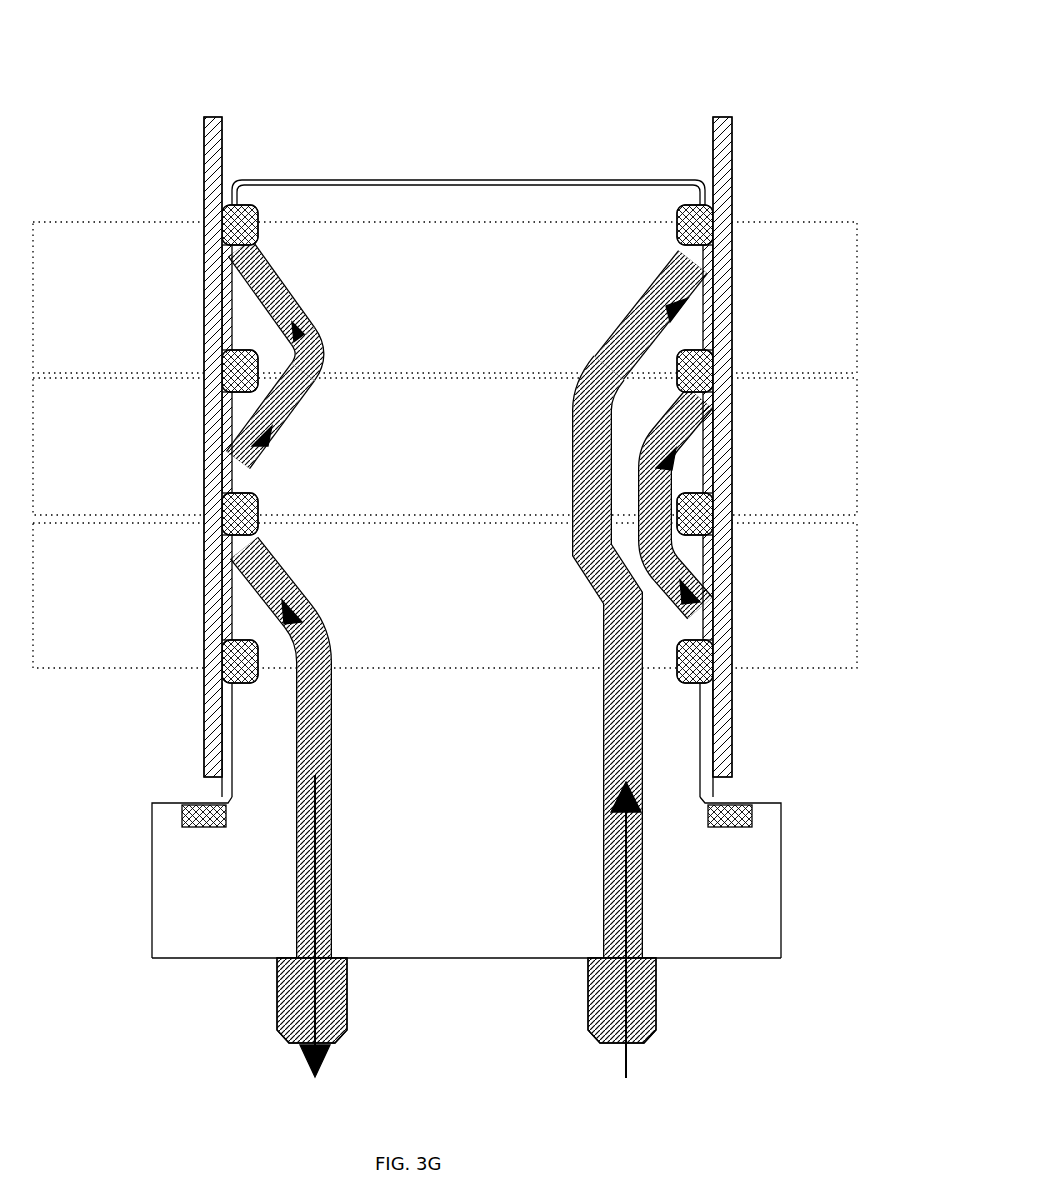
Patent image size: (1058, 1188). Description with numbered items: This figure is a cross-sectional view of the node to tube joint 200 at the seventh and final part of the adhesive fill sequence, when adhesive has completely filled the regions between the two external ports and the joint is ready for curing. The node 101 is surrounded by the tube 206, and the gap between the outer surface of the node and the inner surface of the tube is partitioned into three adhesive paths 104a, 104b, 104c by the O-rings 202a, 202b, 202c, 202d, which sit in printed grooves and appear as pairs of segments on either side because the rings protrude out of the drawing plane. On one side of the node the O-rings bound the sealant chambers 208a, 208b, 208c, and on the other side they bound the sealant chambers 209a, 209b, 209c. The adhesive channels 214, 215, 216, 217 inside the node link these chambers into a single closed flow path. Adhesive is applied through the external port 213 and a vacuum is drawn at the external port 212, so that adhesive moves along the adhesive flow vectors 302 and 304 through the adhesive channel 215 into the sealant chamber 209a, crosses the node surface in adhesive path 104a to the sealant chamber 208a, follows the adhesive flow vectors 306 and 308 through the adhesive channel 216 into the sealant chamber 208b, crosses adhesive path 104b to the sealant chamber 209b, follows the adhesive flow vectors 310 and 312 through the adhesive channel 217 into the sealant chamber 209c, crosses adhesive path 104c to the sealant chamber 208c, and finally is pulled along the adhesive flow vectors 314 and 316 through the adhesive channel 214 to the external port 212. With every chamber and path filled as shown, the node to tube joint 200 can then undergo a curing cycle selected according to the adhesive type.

The node to tube joint 200 is at (128, 58).
The node 101 is at (468, 195).
The adhesive path 104a is at (857, 290).
The adhesive path 104b is at (857, 440).
The adhesive path 104c is at (857, 597).
The tube 206 is at (222, 145).
The O-ring 202a is at (242, 222).
The O-ring 202b is at (235, 370).
The O-ring 202c is at (238, 515).
The O-ring 202d is at (240, 660).
The sealant chamber 208a is at (227, 300).
The sealant chamber 208b is at (230, 448).
The sealant chamber 208c is at (228, 600).
The sealant chamber 209a is at (713, 285).
The sealant chamber 209b is at (713, 430).
The sealant chamber 209c is at (713, 610).
The adhesive flow vector 306 is at (268, 300).
The adhesive channel 216 is at (313, 352).
The adhesive flow vector 308 is at (270, 420).
The adhesive flow vector 314 is at (270, 580).
The adhesive channel 214 is at (332, 740).
The adhesive flow vector 316 is at (320, 848).
The external port 212 is at (280, 997).
The adhesive flow vector 304 is at (660, 335).
The adhesive flow vector 310 is at (660, 463).
The adhesive flow vector 312 is at (660, 558).
The adhesive channel 217 is at (603, 604).
The adhesive channel 215 is at (603, 728).
The adhesive flow vector 302 is at (603, 856).
The external port 213 is at (660, 1020).